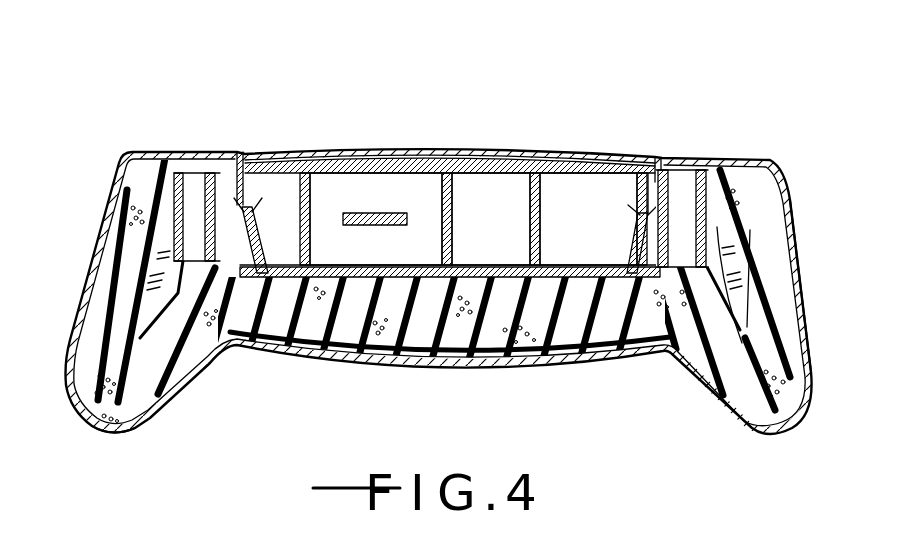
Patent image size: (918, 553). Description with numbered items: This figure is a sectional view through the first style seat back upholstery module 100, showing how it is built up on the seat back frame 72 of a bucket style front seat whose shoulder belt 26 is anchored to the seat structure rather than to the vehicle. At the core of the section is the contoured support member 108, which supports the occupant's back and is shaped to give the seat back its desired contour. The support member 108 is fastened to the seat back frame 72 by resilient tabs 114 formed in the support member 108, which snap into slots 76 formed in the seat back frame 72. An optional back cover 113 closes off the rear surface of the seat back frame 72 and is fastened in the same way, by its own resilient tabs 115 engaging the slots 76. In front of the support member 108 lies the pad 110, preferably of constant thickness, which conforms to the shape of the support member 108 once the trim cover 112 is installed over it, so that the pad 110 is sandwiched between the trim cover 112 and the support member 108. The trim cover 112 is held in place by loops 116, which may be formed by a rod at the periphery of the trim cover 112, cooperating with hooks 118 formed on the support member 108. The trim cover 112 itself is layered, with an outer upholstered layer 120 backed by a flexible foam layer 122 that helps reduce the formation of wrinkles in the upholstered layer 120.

The first style seat back upholstery module 100 is at (692, 88).
The shoulder belt 26 is at (376, 213).
The seat back frame 72 is at (475, 180).
The slot 76 is at (250, 200).
The support member 108 is at (447, 266).
The pad 110 is at (112, 432).
The trim cover 112 is at (816, 385).
The back cover 113 is at (385, 150).
The resilient tab 114 is at (282, 190).
The resilient tab 115 is at (215, 167).
The loop 116 is at (193, 160).
The hook 118 is at (160, 243).
The outer upholstered layer 120 is at (512, 367).
The flexible foam layer 122 is at (336, 350).